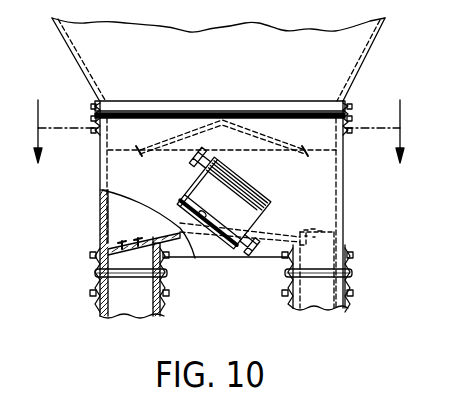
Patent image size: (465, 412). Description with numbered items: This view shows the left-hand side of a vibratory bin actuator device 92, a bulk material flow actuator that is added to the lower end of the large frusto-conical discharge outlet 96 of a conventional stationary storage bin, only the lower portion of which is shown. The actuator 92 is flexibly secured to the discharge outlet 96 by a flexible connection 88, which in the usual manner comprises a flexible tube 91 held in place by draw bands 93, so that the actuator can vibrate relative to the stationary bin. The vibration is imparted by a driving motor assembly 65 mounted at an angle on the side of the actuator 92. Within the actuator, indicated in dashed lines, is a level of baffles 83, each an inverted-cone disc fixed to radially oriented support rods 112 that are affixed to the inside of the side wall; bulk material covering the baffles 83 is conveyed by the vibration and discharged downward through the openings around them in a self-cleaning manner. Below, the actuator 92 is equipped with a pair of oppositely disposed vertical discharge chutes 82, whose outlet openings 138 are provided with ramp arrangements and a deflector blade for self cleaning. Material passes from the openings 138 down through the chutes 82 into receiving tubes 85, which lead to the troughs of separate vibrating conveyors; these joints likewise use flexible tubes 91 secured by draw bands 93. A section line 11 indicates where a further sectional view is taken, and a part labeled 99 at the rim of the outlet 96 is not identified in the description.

The section line 11- 11 is at (219, 122).
The driving motor assembly 65 is at (239, 192).
The discharge chute 82 is at (129, 290).
The baffle 83 is at (251, 124).
The receiving tube 85 is at (86, 313).
The flexible connection 88 is at (360, 111).
The flexible tube 91 is at (168, 273).
The bin actuator device 92 is at (88, 181).
The draw band 93 is at (92, 254).
The discharge outlet 96 is at (323, 37).
The hopper wall 99 is at (373, 34).
The support rod 112 is at (120, 152).
The discharge opening 138 is at (106, 226).